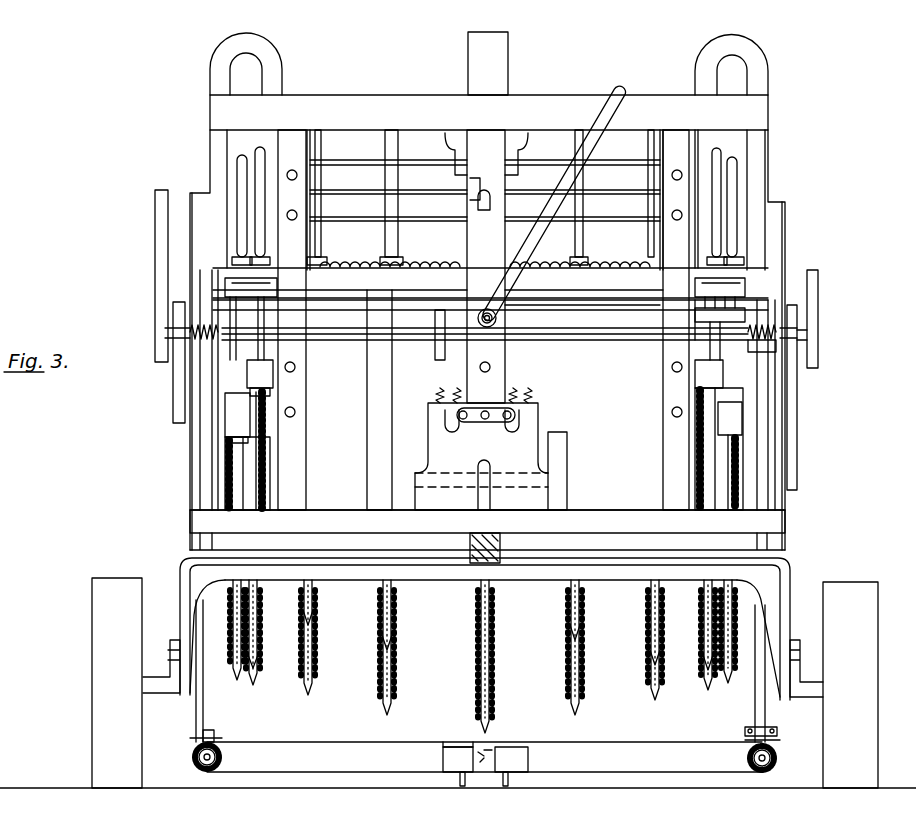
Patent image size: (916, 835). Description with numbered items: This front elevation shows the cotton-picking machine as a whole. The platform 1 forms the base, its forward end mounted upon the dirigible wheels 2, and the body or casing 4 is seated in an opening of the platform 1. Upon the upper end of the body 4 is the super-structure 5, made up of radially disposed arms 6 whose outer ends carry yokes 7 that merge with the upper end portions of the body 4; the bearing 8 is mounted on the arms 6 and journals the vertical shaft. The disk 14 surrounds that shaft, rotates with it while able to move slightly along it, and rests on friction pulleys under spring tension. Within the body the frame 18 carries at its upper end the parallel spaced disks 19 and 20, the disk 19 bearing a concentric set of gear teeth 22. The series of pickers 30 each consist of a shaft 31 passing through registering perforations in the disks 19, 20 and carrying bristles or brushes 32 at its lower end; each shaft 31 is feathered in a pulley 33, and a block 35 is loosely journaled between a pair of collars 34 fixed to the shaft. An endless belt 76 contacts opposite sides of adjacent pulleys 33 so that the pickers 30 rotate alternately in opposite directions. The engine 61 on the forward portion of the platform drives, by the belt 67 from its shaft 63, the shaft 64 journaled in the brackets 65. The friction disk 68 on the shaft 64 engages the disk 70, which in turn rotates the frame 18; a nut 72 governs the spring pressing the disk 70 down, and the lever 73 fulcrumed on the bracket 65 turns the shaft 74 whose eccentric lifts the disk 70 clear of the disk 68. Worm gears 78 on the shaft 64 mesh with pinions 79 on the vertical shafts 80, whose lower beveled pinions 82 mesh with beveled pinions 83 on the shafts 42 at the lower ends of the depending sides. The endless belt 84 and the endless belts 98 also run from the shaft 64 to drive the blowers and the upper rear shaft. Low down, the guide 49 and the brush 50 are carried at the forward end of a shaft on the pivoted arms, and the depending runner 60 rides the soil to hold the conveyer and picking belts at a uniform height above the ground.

The platform 1 is at (580, 530).
The dirigible wheel 2 is at (104, 660).
The body or casing 4 is at (610, 450).
The super-structure 5 is at (760, 165).
The radially disposed arms 6 is at (347, 175).
The yokes 7 is at (757, 80).
The bearing 8 is at (517, 178).
The disk 14 is at (598, 218).
The frame 18 is at (215, 420).
The disk 19 is at (745, 273).
The disk 20 is at (745, 318).
The gear teeth 22 is at (627, 193).
The pickers 30 is at (245, 478).
The shaft 31 is at (240, 230).
The bristles or brushes 32 is at (272, 510).
The pulleys 33 is at (232, 288).
The collars 34 is at (262, 380).
The block 35 is at (235, 405).
The shaft 42 is at (775, 757).
The guide 49 is at (458, 762).
The brush 50 is at (478, 758).
The runner 60 is at (505, 774).
The engine 61 is at (520, 440).
The shaft of the engine 63 is at (395, 475).
The shaft 64 is at (612, 335).
The brackets 65 is at (692, 328).
The belt 67 is at (378, 427).
The friction disk 68 is at (432, 348).
The disk 70 is at (525, 305).
The nut 72 is at (472, 217).
The lever 73 is at (500, 275).
The shaft 74 is at (492, 326).
The endless belt 76 is at (240, 300).
The worm gears 78 is at (775, 335).
The pinions 79 is at (485, 690).
The vertically disposed shafts 80 is at (205, 497).
The beveled pinions 82 is at (745, 740).
The beveled pinions 83 is at (750, 760).
The endless belt 84 is at (798, 465).
The endless belts 98 is at (820, 288).